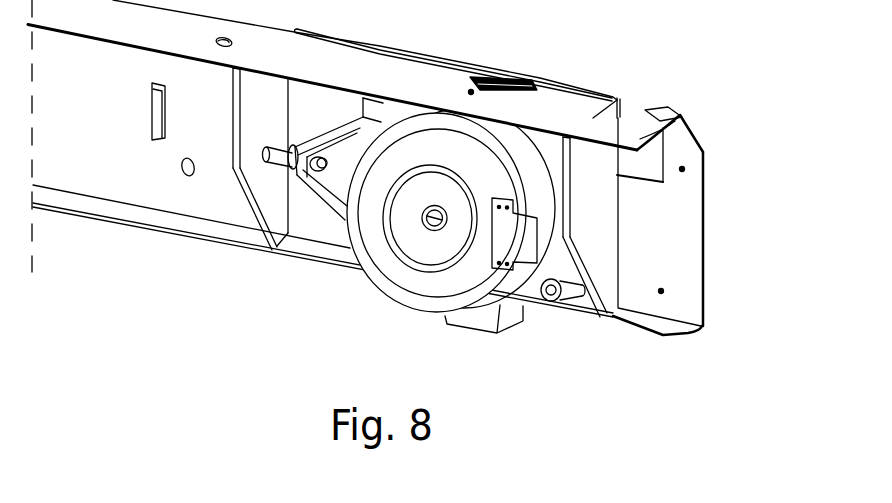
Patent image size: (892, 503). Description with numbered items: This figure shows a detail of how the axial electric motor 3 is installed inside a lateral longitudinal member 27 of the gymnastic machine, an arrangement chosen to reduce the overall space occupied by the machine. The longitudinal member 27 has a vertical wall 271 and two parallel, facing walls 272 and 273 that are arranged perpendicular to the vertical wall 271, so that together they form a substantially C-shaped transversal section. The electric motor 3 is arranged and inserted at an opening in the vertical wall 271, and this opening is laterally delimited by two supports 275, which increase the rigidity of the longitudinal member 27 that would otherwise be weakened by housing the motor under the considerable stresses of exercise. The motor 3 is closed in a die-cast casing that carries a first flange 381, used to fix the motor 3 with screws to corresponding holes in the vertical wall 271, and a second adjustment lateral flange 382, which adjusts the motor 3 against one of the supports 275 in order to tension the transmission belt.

The longitudinal member 27 is at (165, 196).
The vertical wall 271 is at (705, 225).
The wall 272 is at (682, 115).
The wall 273 is at (647, 333).
The support 275 is at (267, 203).
The axial electric motor 3 is at (366, 297).
The first flange 381 is at (538, 282).
The second adjustment lateral flange 382 is at (330, 183).